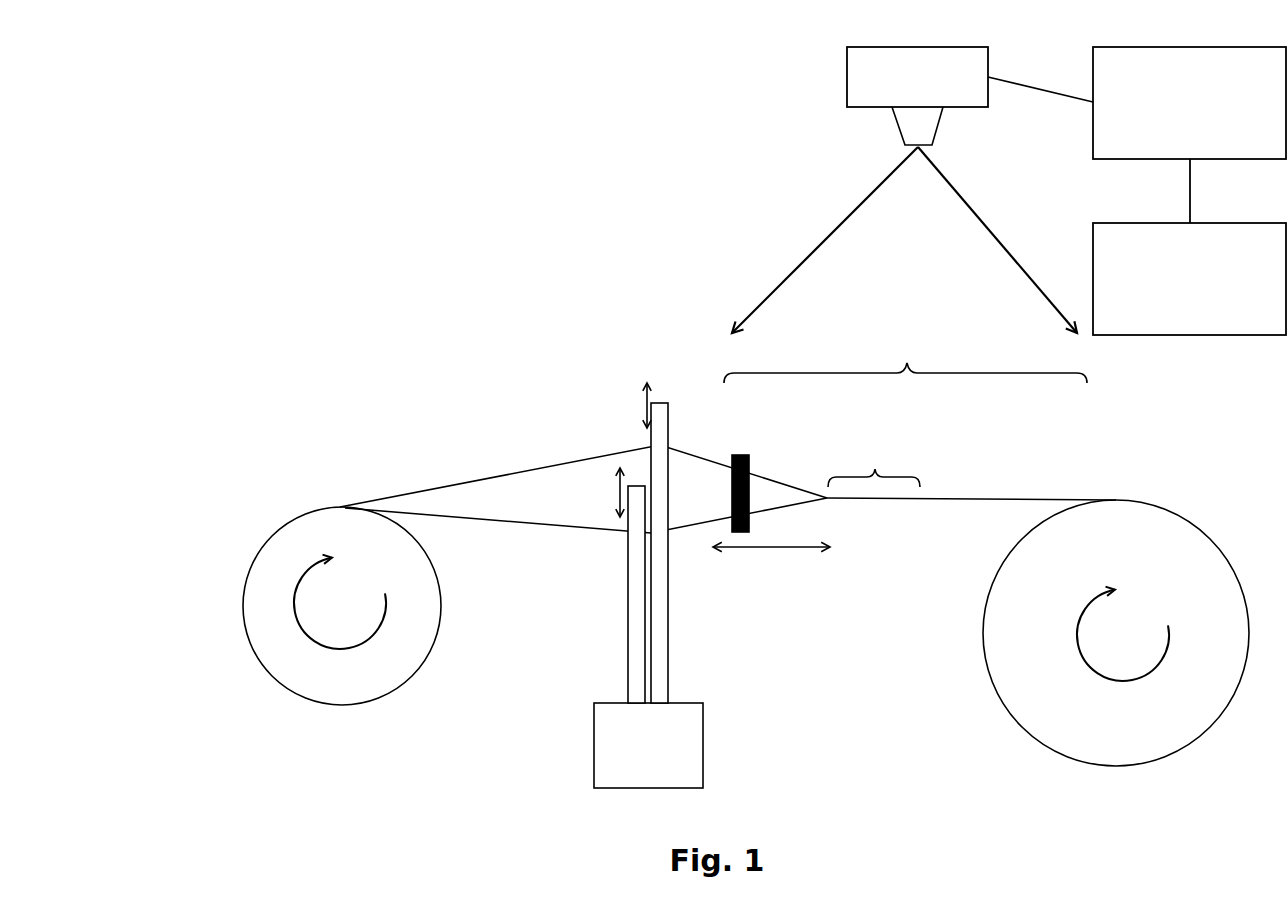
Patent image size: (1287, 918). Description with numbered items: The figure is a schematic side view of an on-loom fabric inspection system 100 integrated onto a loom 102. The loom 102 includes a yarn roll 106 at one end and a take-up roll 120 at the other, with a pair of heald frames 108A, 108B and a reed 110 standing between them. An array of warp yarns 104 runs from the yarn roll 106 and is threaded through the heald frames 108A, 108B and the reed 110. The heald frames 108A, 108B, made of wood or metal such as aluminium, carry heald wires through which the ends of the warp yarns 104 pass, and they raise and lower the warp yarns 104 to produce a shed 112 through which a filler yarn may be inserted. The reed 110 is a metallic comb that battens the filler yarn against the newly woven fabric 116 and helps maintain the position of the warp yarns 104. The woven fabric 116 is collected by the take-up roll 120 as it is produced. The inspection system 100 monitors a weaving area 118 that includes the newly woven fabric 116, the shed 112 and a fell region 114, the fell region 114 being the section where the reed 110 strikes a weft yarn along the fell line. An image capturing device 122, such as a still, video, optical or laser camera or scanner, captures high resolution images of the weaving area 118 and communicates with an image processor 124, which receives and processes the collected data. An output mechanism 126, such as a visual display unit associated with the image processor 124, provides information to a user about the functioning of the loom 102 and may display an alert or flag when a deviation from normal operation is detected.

The on-loom fabric inspection system 100 is at (446, 166).
The loom 102 is at (613, 316).
The warp yarns 104 is at (515, 450).
The yarn roll 106 is at (271, 674).
The heald frame 108A is at (627, 613).
The heald frame 108B is at (667, 613).
The reed 110 is at (727, 522).
The shed 112 is at (712, 460).
The fell region 114 is at (874, 466).
The woven fabric 116 is at (1008, 500).
The weaving area 118 is at (905, 355).
The take-up roll 120 is at (1040, 745).
The image capturing device 122 is at (904, 190).
The image processor 124 is at (1137, 103).
The output mechanism 126 is at (1189, 247).